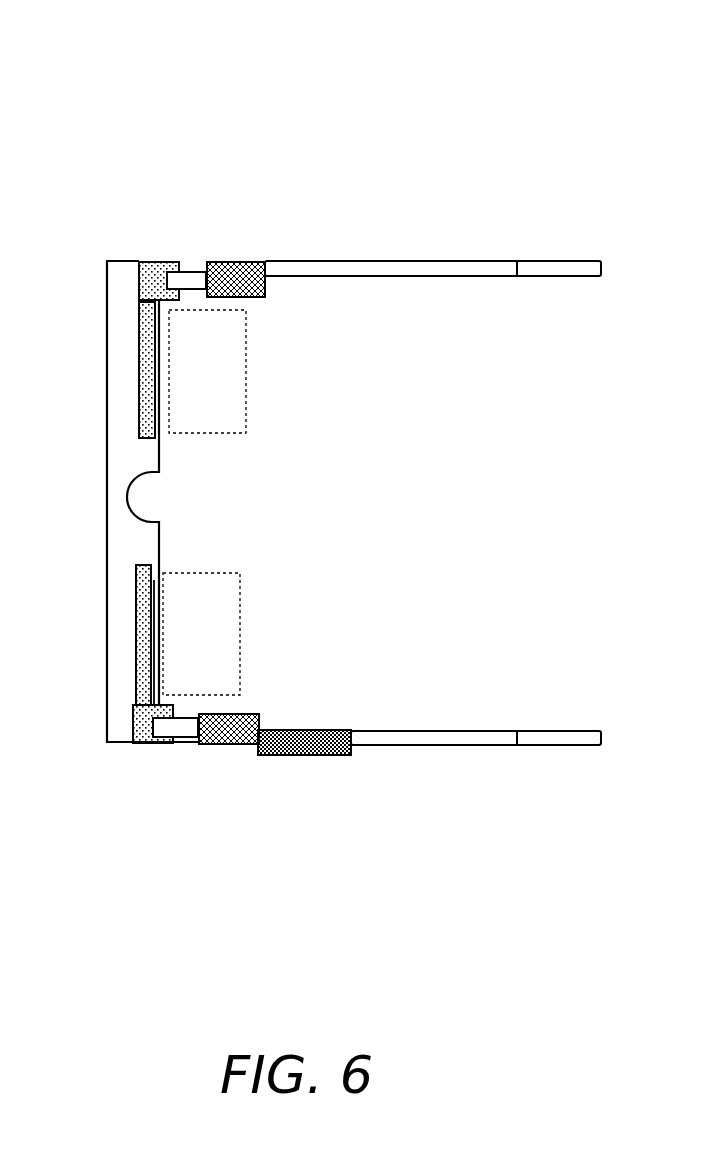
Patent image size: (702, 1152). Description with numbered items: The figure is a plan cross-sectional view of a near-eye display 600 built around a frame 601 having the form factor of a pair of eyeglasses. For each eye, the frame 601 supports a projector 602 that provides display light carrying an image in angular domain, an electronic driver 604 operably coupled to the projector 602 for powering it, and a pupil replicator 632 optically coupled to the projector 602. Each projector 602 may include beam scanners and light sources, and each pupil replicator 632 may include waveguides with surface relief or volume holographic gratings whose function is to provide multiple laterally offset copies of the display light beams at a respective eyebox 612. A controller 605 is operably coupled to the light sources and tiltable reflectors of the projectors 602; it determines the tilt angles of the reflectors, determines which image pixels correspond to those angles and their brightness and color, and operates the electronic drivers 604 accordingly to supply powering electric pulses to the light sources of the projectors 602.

The near-eye display 600 is at (339, 105).
The frame 601 is at (482, 260).
The projector 602 is at (194, 264).
The electronic driver 604 is at (242, 262).
The controller 605 is at (297, 756).
The eyebox 612 is at (218, 377).
The pupil replicator 632 is at (138, 363).